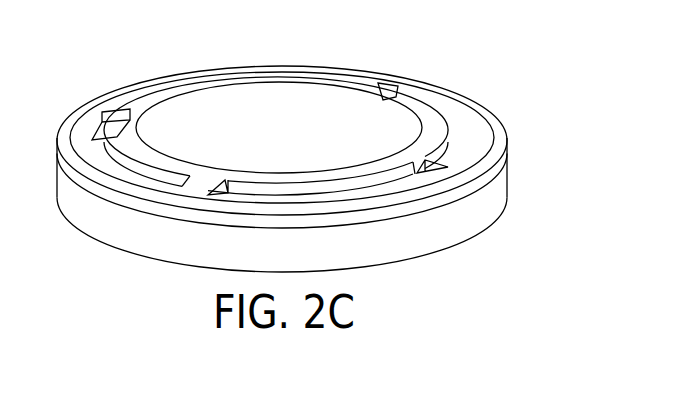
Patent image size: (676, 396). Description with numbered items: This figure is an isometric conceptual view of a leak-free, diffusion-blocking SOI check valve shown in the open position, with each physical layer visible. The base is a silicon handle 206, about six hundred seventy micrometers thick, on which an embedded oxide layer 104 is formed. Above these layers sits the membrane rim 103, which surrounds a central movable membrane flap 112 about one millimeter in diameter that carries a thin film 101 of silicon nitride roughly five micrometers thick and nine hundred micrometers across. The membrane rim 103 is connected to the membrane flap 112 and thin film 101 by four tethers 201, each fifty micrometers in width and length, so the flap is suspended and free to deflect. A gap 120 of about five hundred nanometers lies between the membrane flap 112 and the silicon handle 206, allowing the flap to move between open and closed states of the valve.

The thin film 101 is at (292, 90).
The membrane rim 103 is at (468, 103).
The embedded oxide layer 104 is at (492, 174).
The membrane flap 112 is at (430, 127).
The gap 120 is at (100, 140).
The tether 201 is at (130, 108).
The silicon handle 206 is at (468, 228).